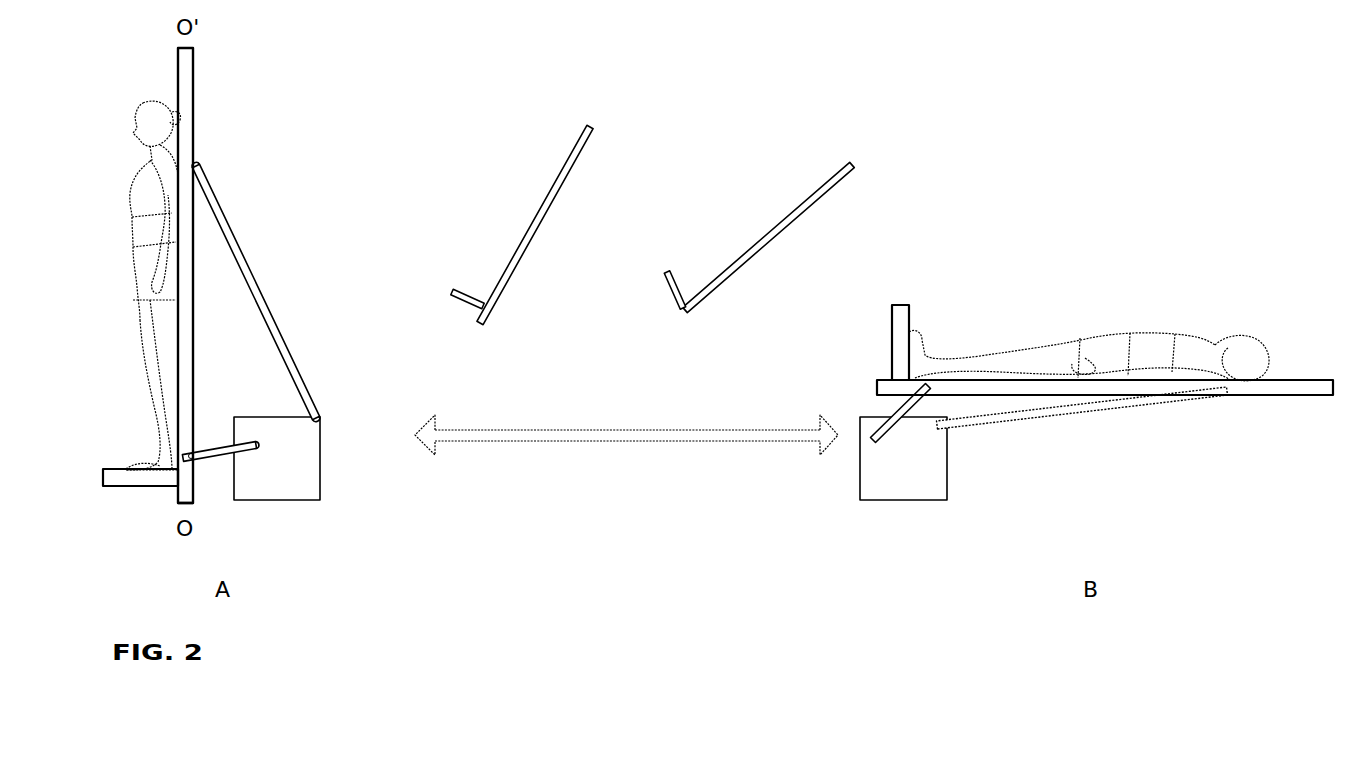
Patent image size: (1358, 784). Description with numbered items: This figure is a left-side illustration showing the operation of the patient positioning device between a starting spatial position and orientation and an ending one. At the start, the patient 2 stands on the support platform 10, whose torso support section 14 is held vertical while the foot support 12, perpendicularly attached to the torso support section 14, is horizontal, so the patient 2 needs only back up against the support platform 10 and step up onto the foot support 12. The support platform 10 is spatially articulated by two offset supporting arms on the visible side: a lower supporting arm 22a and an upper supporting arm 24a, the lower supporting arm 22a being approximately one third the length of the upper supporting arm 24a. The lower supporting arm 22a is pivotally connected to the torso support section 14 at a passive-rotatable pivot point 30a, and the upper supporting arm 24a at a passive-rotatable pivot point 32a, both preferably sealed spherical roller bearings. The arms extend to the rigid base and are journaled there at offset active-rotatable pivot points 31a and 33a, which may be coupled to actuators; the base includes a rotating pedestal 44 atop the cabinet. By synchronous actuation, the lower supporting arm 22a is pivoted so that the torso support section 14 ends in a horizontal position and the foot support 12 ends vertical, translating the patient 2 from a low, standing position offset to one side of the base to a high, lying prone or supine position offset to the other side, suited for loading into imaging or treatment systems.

The patient 2 is at (143, 230).
The support platform 10 is at (196, 92).
The foot support 12 is at (116, 468).
The torso support section 14 is at (175, 492).
The lower supporting arm 22a is at (192, 455).
The upper supporting arm 24a is at (225, 235).
The passive-rotatable pivot point 30a is at (200, 465).
The active-rotatable pivot point 31a is at (260, 448).
The passive-rotatable pivot point 32a is at (197, 167).
The active-rotatable pivot point 33a is at (317, 415).
The rotating pedestal 44 is at (272, 488).